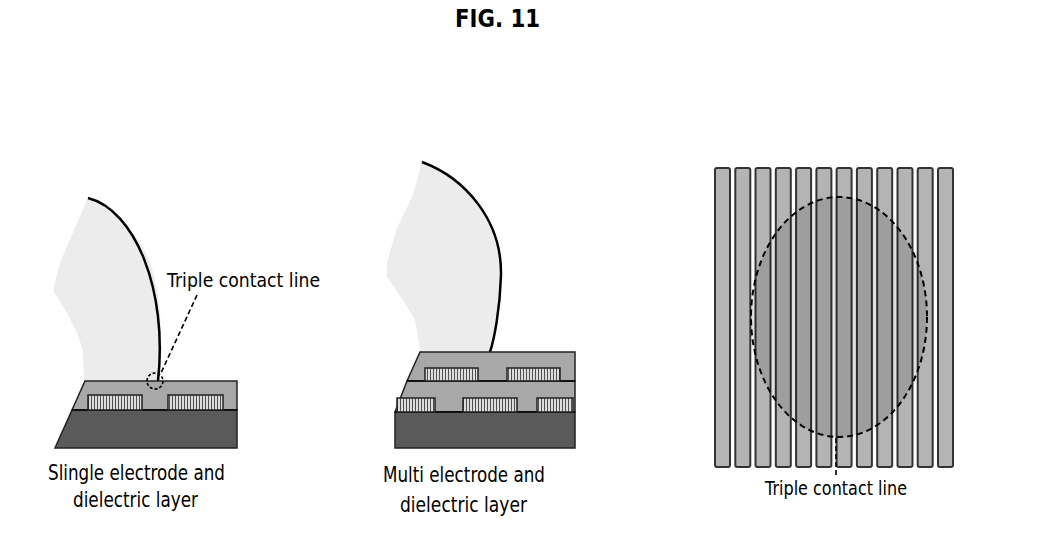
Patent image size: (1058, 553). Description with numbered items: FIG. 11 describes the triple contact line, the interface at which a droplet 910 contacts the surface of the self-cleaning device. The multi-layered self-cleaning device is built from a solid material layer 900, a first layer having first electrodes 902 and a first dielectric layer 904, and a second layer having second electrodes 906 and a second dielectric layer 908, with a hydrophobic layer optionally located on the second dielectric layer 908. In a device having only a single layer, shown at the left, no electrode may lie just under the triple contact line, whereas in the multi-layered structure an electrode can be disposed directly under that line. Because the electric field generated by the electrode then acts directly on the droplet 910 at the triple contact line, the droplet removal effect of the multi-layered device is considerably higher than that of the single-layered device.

The solid material layer 900 is at (567, 433).
The first electrodes 902 is at (567, 404).
The first dielectric layer 904 is at (567, 387).
The second electrodes 906 is at (557, 373).
The second dielectric layer 908 is at (563, 358).
The droplet 910 is at (457, 203).